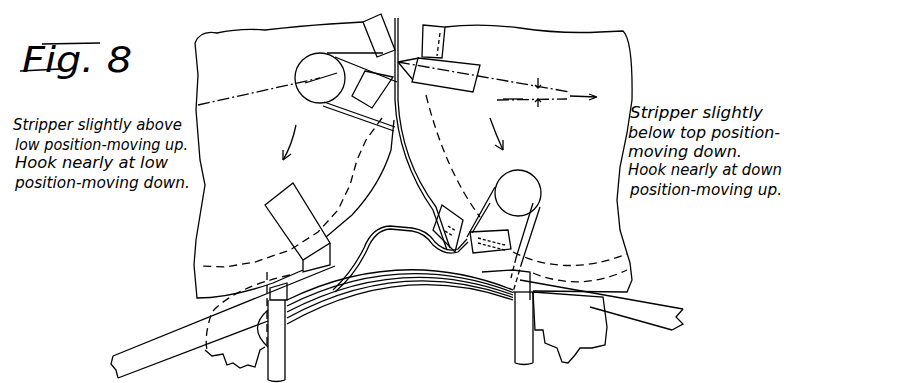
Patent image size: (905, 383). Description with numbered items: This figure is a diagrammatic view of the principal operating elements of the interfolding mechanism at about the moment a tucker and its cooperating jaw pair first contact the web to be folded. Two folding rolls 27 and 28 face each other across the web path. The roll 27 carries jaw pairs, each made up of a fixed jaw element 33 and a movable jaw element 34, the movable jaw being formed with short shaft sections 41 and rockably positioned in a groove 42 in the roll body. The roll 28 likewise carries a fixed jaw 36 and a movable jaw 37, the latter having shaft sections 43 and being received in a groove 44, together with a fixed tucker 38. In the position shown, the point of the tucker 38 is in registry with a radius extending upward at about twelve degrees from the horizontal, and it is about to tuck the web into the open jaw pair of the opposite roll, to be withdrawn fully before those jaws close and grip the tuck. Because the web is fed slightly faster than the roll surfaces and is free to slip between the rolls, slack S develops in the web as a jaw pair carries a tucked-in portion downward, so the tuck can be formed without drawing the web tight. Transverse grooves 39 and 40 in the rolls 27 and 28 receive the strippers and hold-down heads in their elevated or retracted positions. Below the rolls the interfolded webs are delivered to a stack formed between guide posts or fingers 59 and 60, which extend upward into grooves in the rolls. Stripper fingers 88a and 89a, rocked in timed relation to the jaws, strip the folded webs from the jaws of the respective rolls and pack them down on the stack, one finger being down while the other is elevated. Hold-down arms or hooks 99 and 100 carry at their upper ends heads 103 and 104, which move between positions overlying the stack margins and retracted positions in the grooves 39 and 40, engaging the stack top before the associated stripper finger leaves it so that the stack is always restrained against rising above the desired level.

The roll 27 is at (200, 77).
The roll 28 is at (610, 36).
The fixed jaw element 33 is at (375, 35).
The movable jaw element 34 is at (358, 104).
The fixed jaw 36 is at (440, 204).
The movable jaw 37 is at (512, 240).
The fixed tucker 38 is at (452, 82).
The groove 39 is at (200, 267).
The groove 40 is at (627, 252).
The shaft section 41 is at (314, 92).
The groove 42 is at (380, 116).
The shaft section 43 is at (580, 194).
The groove 44 is at (540, 215).
The guide post 59 is at (286, 367).
The guide post 60 is at (514, 352).
The stripper finger 88a is at (163, 351).
The stripper finger 89a is at (650, 318).
The hold-down arm 99 is at (222, 370).
The hold-down arm 100 is at (585, 356).
The head 103 is at (336, 258).
The head 104 is at (493, 280).
The slack S is at (416, 214).